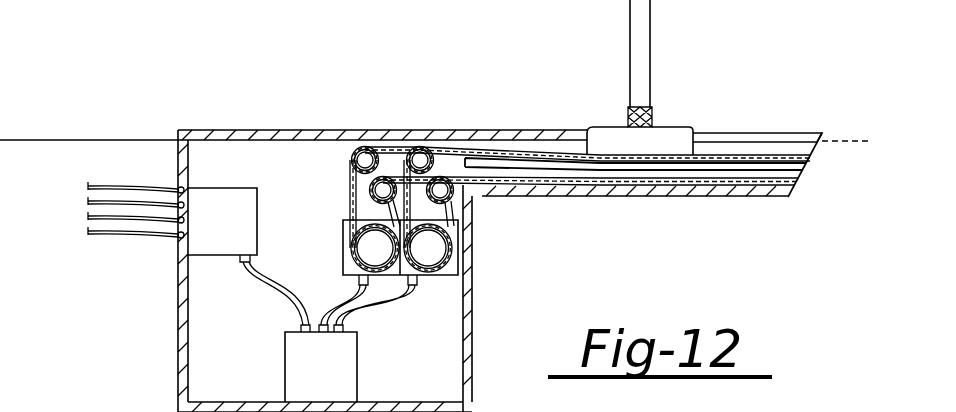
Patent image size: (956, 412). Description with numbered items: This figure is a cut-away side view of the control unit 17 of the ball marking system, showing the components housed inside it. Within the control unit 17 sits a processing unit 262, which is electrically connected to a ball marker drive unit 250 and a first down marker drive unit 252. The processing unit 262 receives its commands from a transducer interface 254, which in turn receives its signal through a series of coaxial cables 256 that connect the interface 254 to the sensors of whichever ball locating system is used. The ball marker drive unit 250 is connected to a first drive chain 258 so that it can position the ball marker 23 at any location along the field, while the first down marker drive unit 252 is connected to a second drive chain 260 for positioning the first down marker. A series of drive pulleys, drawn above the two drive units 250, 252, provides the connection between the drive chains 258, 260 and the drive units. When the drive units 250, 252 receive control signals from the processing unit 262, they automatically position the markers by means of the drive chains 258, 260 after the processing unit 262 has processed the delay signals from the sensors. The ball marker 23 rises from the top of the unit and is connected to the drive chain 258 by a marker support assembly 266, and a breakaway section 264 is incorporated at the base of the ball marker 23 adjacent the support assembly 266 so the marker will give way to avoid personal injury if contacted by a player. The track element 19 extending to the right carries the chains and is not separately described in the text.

The control unit 17 is at (473, 360).
The track rail 19 is at (730, 197).
The ball marker 23 is at (640, 27).
The ball marker drive unit 250 is at (343, 238).
The first down marker drive unit 252 is at (440, 275).
The transducer interface 254 is at (217, 260).
The coaxial cables 256 is at (125, 240).
The first drive chain 258 is at (455, 222).
The second drive chain 260 is at (352, 177).
The processing unit 262 is at (345, 360).
The breakaway section 264 is at (652, 100).
The marker support assembly 266 is at (678, 142).